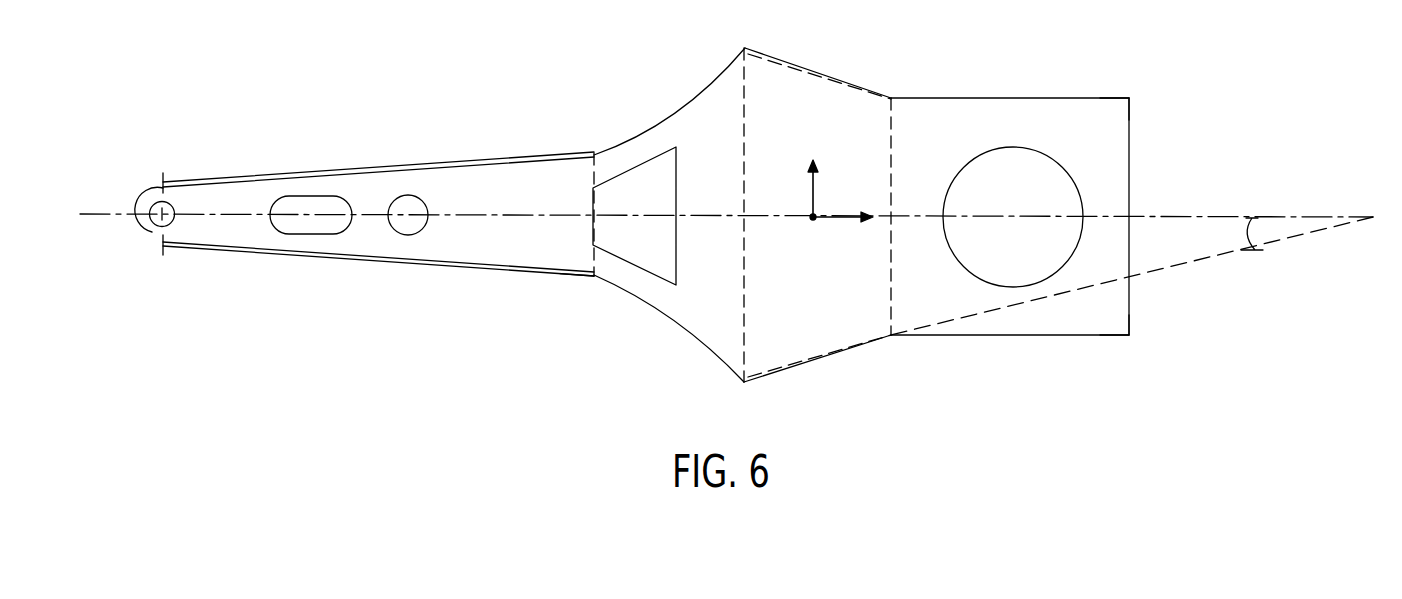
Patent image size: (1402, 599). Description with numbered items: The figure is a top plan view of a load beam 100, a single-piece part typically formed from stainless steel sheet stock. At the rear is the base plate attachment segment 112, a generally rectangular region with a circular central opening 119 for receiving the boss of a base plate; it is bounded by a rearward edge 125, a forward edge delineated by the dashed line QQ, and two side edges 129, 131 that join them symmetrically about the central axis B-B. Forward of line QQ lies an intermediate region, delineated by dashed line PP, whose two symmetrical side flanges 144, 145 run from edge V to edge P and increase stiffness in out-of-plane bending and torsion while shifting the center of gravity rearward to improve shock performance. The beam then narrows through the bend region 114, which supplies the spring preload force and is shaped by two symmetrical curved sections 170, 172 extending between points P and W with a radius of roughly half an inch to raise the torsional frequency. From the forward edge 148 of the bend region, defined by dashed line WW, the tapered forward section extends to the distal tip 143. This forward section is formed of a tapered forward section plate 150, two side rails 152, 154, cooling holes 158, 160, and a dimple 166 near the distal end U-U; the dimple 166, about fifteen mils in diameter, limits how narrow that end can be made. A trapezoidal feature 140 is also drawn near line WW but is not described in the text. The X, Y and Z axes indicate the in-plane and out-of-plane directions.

The load beam 100 is at (567, 105).
The base plate attachment segment 112 is at (1065, 323).
The bend region 114 is at (702, 325).
The circular central opening 119 is at (1030, 150).
The rearward edge 125 is at (1130, 137).
The side edge 129 is at (1093, 97).
The side edge 131 is at (1107, 337).
The tapered coupling section 140 is at (630, 173).
The distal tip 143 is at (136, 210).
The side flange 144 is at (825, 358).
The side flange 145 is at (808, 70).
The forward edge 148 is at (593, 264).
The tapered forward section plate 150 is at (452, 187).
The side rail 152 is at (235, 252).
The side rail 154 is at (233, 178).
The cooling hole 158 is at (407, 235).
The cooling hole 160 is at (313, 235).
The dimple 166 is at (152, 232).
The curved section 170 is at (635, 298).
The curved section 172 is at (670, 110).